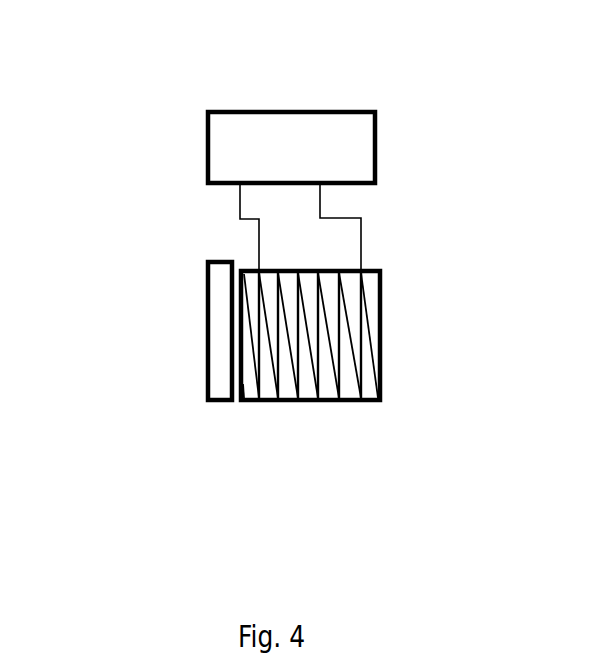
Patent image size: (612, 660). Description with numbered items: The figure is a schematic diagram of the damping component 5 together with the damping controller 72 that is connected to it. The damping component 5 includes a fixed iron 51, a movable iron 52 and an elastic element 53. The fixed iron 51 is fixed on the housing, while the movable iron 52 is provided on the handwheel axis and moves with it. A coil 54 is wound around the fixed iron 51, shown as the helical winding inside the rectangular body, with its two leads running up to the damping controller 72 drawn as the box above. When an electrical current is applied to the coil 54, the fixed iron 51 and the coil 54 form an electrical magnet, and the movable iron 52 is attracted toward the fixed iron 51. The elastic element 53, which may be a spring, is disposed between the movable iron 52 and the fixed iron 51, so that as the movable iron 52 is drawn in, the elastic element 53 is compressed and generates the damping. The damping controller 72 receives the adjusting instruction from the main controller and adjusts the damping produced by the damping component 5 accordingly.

The damping component 5 is at (157, 237).
The fixed iron 51 is at (372, 323).
The movable iron 52 is at (212, 340).
The elastic element 53 is at (242, 381).
The coil 54 is at (368, 382).
The damping controller 72 is at (305, 150).